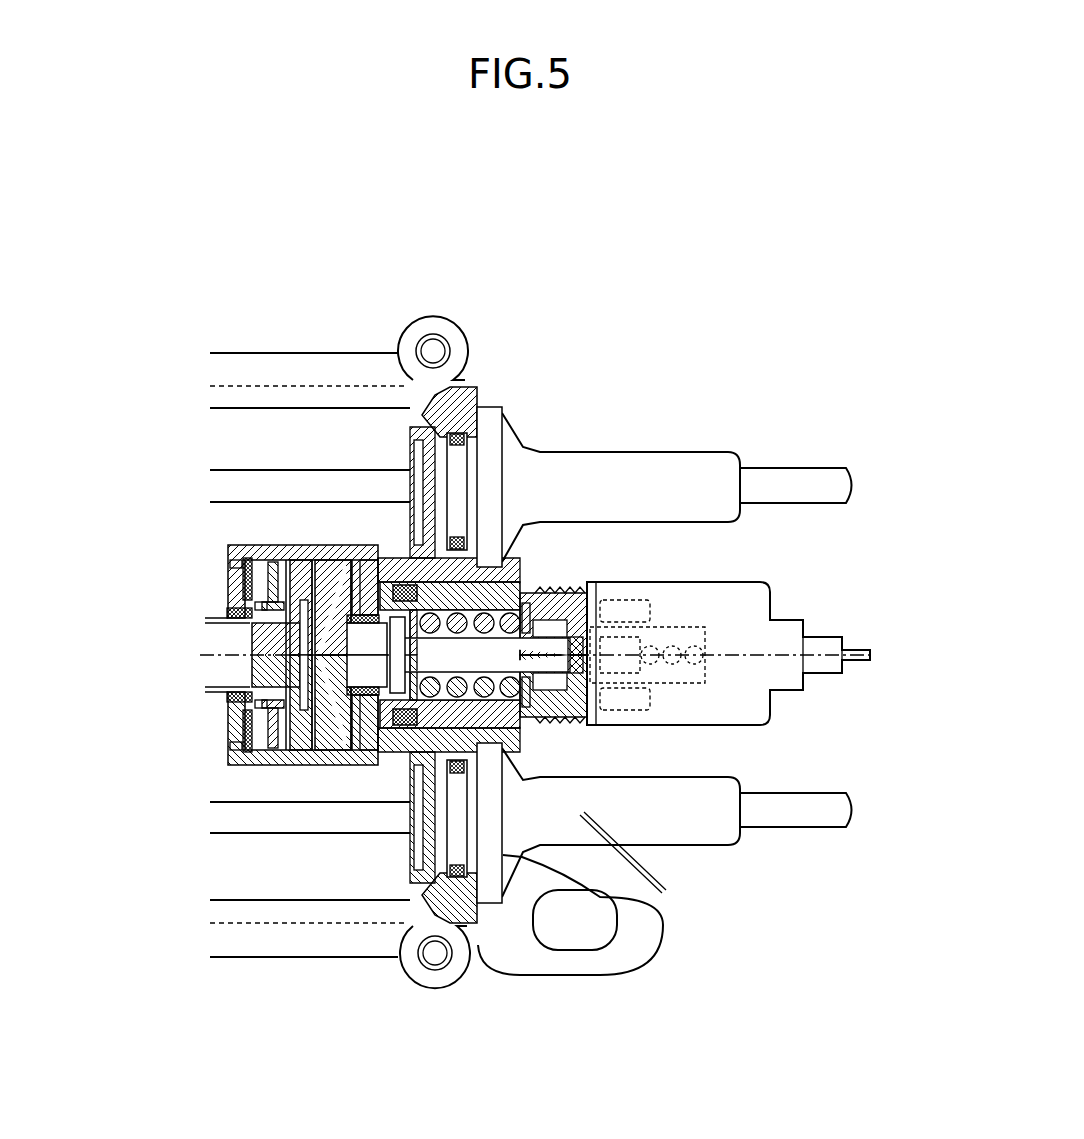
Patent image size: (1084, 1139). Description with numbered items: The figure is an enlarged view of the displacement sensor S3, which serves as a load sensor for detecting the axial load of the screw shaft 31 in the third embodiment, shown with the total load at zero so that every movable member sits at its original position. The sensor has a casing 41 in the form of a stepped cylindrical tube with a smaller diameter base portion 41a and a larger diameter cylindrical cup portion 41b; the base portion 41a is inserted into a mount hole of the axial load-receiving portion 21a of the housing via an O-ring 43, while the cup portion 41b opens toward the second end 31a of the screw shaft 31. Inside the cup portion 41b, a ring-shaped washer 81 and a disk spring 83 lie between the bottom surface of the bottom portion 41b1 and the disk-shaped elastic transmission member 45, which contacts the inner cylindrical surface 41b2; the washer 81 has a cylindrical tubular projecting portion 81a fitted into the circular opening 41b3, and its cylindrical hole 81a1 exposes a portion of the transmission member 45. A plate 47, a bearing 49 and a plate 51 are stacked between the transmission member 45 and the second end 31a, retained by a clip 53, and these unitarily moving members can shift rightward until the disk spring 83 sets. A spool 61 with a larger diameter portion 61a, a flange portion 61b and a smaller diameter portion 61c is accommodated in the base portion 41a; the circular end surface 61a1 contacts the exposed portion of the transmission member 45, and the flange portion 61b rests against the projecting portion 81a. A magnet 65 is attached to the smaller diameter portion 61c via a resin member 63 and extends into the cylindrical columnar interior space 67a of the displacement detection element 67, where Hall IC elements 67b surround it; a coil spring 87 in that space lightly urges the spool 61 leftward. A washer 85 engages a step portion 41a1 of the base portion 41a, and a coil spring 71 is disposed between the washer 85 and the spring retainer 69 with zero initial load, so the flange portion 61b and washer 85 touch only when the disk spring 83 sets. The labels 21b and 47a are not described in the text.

The axial load-receiving portion 21a is at (466, 582).
The bearing holder 21b is at (473, 392).
The screw shaft 31 is at (227, 708).
The second end 31a is at (238, 763).
The casing 41 is at (233, 765).
The base portion 41a is at (377, 762).
The step portion 41a1 is at (420, 885).
The cylindrical cup portion 41b is at (285, 765).
The bottom portion 41b1 is at (355, 765).
The inner cylindrical surface 41b2 is at (342, 765).
The circular opening 41b3 is at (265, 765).
The O-ring 43 is at (507, 430).
The transmission member 45 is at (356, 572).
The plate 47 is at (300, 560).
The holder hole 47a is at (325, 560).
The bearing 49 is at (272, 545).
The plate 51 is at (250, 548).
The clip 53 is at (230, 545).
The spool 61 is at (582, 742).
The larger diameter portion 61a is at (390, 700).
The circular end surface 61a1 is at (316, 700).
The flange portion 61b is at (662, 892).
The smaller diameter portion 61c is at (600, 770).
The resin member 63 is at (560, 566).
The magnet 65 is at (633, 600).
The displacement detection element 67 is at (600, 582).
The cylindrical columnar interior space 67a is at (693, 628).
The Hall IC elements 67b is at (660, 625).
The spring retainer 69 is at (700, 452).
The coil spring 71 is at (600, 521).
The washer 81 is at (372, 545).
The cylindrical tubular projecting portion 81a is at (437, 445).
The cylindrical hole 81a1 is at (250, 768).
The disk spring 83 is at (403, 555).
The washer 85 is at (490, 570).
The coil spring 87 is at (665, 690).
The displacement sensor S3 is at (346, 530).